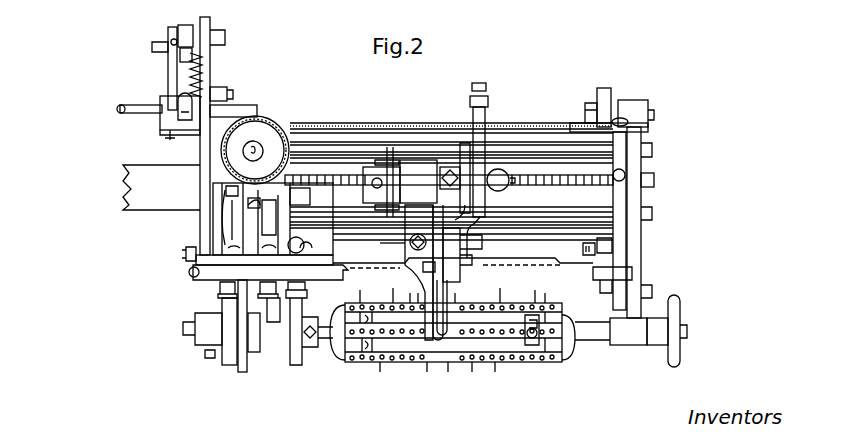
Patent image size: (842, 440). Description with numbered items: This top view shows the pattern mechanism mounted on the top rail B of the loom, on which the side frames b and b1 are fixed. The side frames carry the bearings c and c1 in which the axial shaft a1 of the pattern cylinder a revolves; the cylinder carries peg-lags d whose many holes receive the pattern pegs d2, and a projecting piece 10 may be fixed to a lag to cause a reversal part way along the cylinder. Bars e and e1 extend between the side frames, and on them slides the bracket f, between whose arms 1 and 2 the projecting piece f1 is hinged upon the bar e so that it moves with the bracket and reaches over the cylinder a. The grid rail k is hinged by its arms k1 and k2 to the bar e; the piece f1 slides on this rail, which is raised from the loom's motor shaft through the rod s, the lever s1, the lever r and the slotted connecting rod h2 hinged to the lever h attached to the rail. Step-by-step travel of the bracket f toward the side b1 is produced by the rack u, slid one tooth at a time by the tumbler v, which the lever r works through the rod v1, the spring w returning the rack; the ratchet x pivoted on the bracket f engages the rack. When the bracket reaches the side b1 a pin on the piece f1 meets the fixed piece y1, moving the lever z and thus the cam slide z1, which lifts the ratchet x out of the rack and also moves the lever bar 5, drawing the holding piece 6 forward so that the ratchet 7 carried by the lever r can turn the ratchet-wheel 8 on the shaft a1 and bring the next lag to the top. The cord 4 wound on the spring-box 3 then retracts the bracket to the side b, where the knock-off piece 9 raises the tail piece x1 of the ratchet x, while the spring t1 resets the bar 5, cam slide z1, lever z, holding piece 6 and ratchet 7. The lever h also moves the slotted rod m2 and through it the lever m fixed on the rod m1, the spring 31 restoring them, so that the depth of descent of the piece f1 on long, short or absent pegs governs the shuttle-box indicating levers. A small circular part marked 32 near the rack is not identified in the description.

The lever h is at (100, 263).
The lever m is at (170, 41).
The slotted rod m2 is at (185, 60).
The rod m1 is at (135, 101).
The spring 31 is at (207, 70).
The lever r is at (216, 97).
The slotted connecting rod h2 is at (172, 128).
The top rail B is at (161, 187).
The cord 4 is at (264, 120).
The spring-box 3 is at (259, 151).
The side frame b is at (263, 382).
The knock-off piece 9 is at (300, 197).
The arm of grid rail k1 is at (286, 247).
The grid rail k is at (220, 283).
The tumbler v is at (232, 204).
The rod v1 is at (188, 258).
The ratchet 7 is at (222, 297).
The lever bar 5 is at (358, 128).
The bar e1 is at (521, 150).
The rack u is at (548, 178).
The bar e is at (451, 236).
The tail piece x1 is at (370, 190).
The sliding bracket f is at (430, 181).
The projecting piece f1 is at (436, 392).
The arm of bracket 2 is at (382, 245).
The arm of bracket 1 is at (472, 243).
The cam slide z1 is at (478, 118).
The roller 32 is at (498, 180).
The ratchet x is at (511, 185).
The lever z is at (447, 290).
The spring t1 is at (633, 175).
The lever s1 is at (610, 104).
The rod s is at (633, 113).
The spring w is at (655, 177).
The arm of grid rail k2 is at (618, 243).
The side frame b1 is at (640, 291).
The bearing c1 is at (621, 331).
The pattern cylinder a is at (345, 362).
The peg-lag d is at (410, 362).
The pattern surface peg d2 is at (495, 372).
The fixed piece y1 is at (557, 315).
The projecting piece 10 is at (538, 340).
The axial shaft a1 is at (190, 330).
The ratchet-wheel 8 is at (230, 350).
The holding piece 6 is at (239, 340).
The bearing c is at (290, 323).